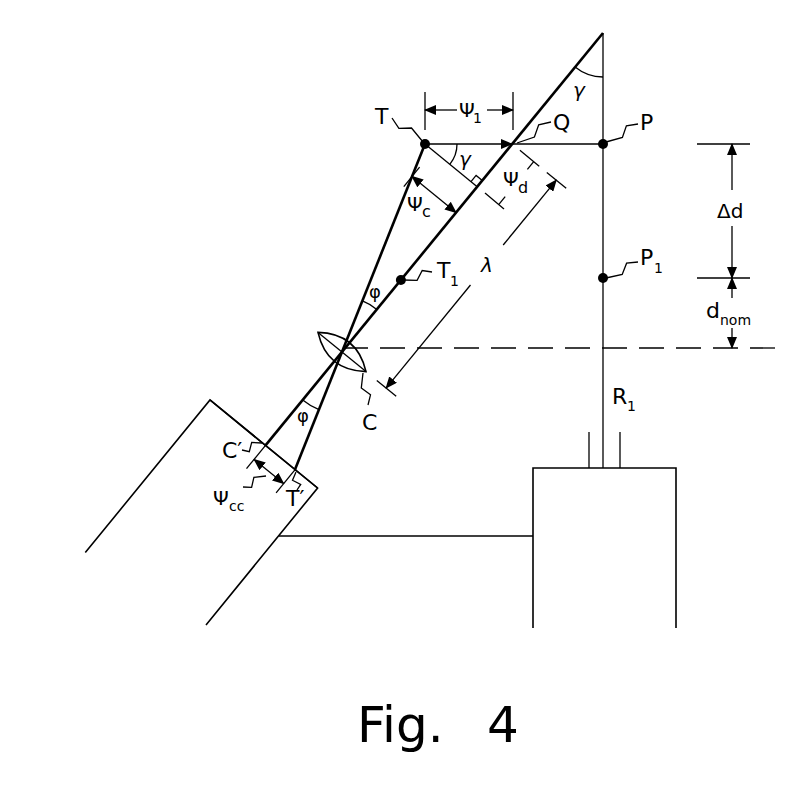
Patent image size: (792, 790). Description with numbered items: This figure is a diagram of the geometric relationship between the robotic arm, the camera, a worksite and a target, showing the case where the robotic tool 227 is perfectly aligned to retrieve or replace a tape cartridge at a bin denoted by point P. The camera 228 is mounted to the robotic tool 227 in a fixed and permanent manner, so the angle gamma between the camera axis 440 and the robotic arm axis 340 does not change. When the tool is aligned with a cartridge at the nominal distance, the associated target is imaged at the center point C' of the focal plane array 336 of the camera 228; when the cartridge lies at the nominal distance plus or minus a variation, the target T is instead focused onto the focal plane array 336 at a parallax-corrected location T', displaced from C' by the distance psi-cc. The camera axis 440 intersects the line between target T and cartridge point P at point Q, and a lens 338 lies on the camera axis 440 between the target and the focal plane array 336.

The camera axis 440 is at (569, 72).
The robotic arm axis 340 is at (605, 60).
The lens 338 is at (328, 331).
The focal plane array 336 is at (224, 405).
The camera 228 is at (160, 456).
The robotic tool 227 is at (677, 528).